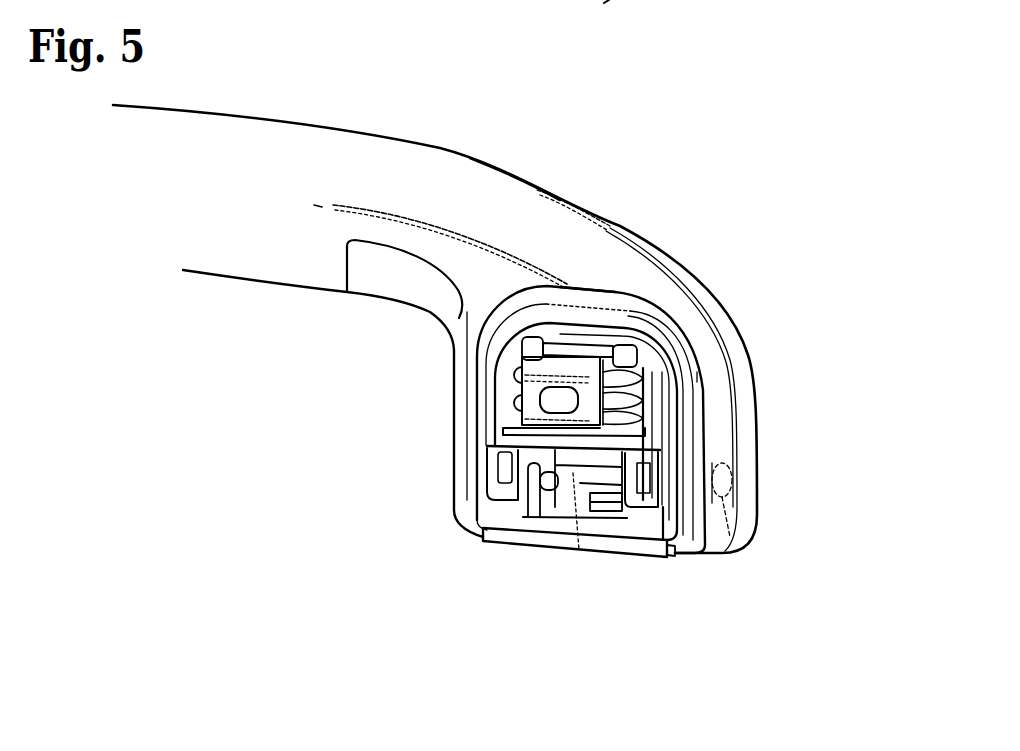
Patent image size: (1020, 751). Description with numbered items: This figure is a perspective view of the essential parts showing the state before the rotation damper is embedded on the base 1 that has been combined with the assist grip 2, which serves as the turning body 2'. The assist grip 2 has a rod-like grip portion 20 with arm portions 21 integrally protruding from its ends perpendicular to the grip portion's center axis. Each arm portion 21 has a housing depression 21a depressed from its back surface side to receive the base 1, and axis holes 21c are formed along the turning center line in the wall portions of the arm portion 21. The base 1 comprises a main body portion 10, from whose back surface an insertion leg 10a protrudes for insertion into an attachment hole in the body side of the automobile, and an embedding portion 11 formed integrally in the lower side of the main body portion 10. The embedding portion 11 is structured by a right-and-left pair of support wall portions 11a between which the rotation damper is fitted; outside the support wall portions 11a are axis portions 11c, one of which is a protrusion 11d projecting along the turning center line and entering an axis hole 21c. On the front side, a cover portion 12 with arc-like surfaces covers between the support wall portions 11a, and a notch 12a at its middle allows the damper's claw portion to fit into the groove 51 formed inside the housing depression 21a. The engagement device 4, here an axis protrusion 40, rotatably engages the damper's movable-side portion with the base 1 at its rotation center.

The base 1 is at (662, 345).
The assist grip 2 is at (515, 143).
The turning body 2' is at (515, 143).
The engagement device 4 is at (480, 528).
The axis protrusion 40 is at (537, 477).
The main body portion 10 is at (645, 296).
The insertion leg 10a is at (510, 393).
The embedding portion 11 is at (579, 561).
The cover portion 12 is at (575, 505).
The support wall portion 11a is at (547, 524).
The axis portion 11c is at (791, 471).
The protrusion 11d is at (730, 480).
The notch 12a is at (579, 550).
The grip portion 20 is at (352, 148).
The arm portion 21 is at (453, 371).
The housing depression 21a is at (598, 287).
The axis hole 21c is at (740, 541).
The groove 51 is at (605, 522).